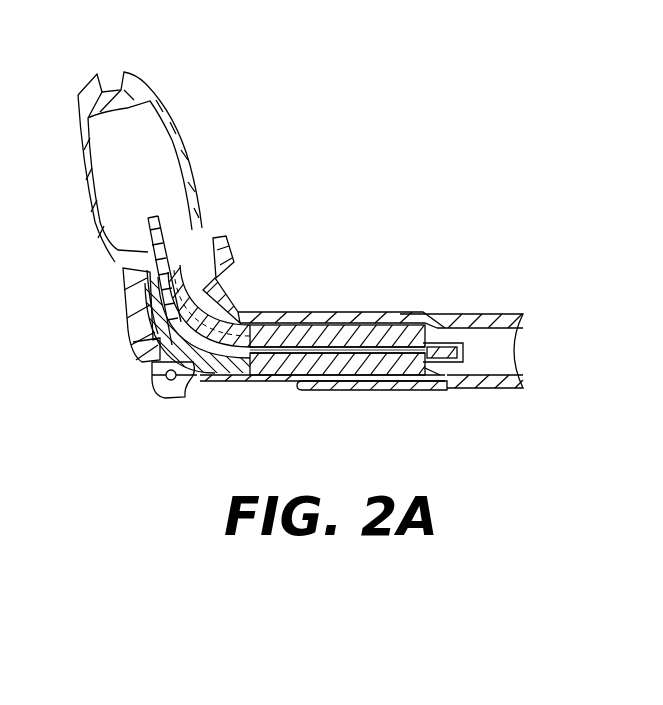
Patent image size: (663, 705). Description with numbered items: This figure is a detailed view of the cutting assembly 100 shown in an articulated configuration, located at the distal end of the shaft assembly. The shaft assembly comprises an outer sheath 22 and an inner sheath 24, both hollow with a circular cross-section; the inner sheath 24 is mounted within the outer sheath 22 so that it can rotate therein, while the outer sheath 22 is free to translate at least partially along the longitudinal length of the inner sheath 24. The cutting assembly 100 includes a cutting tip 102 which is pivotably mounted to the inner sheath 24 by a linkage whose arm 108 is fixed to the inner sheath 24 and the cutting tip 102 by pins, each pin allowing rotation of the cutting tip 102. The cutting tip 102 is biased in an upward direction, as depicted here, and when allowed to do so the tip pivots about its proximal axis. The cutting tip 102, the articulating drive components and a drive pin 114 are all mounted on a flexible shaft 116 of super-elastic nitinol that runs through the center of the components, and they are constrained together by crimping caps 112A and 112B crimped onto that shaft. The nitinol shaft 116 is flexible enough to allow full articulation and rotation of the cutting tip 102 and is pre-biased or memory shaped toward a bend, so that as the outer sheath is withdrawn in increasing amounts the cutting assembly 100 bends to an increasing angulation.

The cutting assembly 100 is at (207, 130).
The cutting tip 102 is at (155, 86).
The arm 108 is at (210, 358).
The crimping cap 112A is at (183, 240).
The crimping cap 112B is at (468, 350).
The drive pin 114 is at (372, 382).
The flexible shaft 116 is at (192, 268).
The outer sheath 22 is at (456, 390).
The inner sheath 24 is at (383, 312).